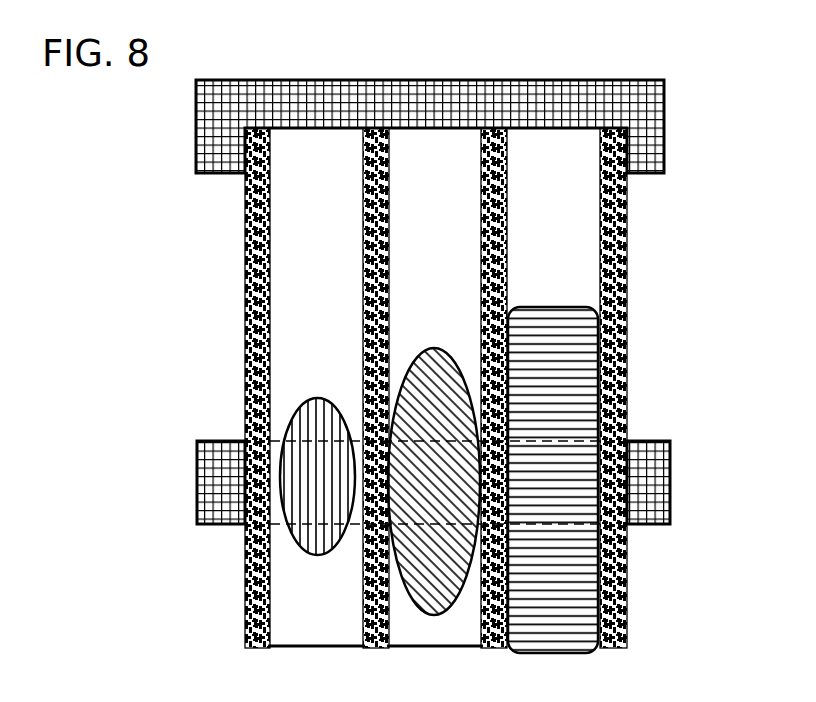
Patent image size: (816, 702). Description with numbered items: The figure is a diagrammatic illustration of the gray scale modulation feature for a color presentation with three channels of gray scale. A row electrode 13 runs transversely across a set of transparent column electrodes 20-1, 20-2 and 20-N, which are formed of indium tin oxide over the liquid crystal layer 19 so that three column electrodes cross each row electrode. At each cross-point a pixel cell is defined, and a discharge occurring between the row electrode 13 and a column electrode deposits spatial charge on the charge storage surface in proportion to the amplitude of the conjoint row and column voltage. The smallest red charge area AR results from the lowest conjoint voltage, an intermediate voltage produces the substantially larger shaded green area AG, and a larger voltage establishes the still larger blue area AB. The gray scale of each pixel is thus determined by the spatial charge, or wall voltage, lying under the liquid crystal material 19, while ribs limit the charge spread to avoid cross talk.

The row electrode 13 is at (650, 132).
The liquid crystal layer 19 is at (627, 246).
The transparent column electrode 20-1 is at (296, 152).
The transparent column electrode 20-2 is at (420, 153).
The transparent column electrode 20-N is at (537, 153).
The red spatial charge area AR is at (317, 398).
The green spatial charge area AG is at (420, 358).
The blue spatial charge area AB is at (531, 320).